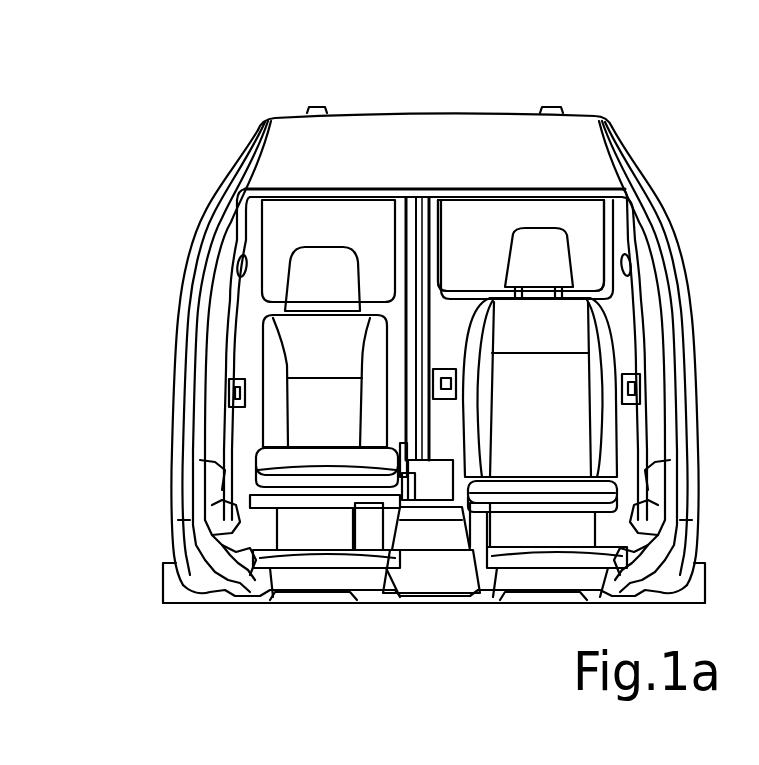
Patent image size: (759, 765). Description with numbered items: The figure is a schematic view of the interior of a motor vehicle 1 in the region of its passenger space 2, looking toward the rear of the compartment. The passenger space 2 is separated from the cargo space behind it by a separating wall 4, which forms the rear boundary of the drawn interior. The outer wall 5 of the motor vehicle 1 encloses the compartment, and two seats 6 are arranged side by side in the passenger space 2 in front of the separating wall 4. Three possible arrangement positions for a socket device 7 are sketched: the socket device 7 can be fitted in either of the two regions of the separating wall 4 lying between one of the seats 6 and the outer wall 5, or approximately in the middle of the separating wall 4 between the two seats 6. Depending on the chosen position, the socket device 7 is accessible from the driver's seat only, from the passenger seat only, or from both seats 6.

The motor vehicle 1 is at (442, 349).
The passenger space 2 is at (602, 257).
The separating wall 4 is at (457, 223).
The outer wall 5 is at (293, 153).
The seats 6 is at (308, 363).
The socket device 7 is at (229, 392).